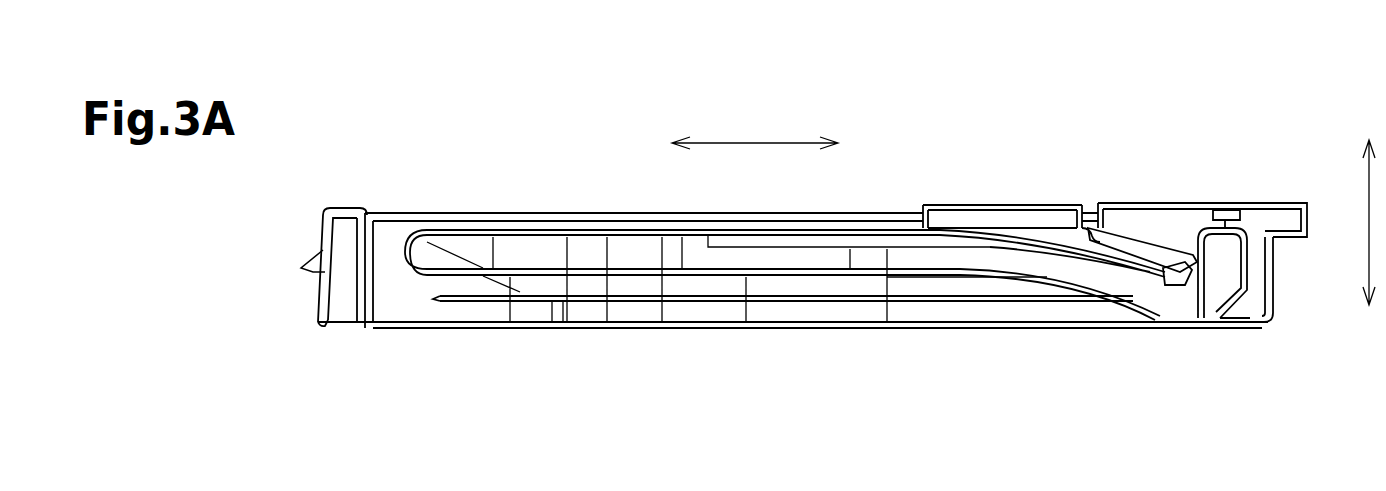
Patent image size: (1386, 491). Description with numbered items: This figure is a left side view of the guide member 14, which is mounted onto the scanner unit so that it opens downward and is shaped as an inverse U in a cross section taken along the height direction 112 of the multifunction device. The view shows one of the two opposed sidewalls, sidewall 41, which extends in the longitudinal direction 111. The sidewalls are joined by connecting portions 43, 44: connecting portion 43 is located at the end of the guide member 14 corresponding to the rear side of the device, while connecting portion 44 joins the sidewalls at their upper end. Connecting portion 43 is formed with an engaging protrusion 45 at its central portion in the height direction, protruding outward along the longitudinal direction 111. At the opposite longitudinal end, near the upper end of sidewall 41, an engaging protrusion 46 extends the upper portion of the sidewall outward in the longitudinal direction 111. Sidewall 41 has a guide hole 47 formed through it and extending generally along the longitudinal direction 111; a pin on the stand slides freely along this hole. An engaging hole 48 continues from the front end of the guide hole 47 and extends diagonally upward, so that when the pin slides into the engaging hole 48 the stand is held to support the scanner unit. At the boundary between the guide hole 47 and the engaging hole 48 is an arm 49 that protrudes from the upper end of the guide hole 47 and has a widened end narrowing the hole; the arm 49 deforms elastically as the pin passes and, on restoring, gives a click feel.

The guide member 14 is at (775, 382).
The sidewall 41 is at (472, 312).
The connecting portion 43 is at (357, 316).
The connecting portion 44 is at (1031, 205).
The engaging protrusion 45 is at (302, 270).
The engaging protrusion 46 is at (1307, 218).
The guide hole 47 is at (578, 250).
The engaging hole 48 is at (1227, 277).
The arm 49 is at (1153, 272).
The longitudinal direction 111 is at (757, 145).
The height direction 112 is at (1370, 223).